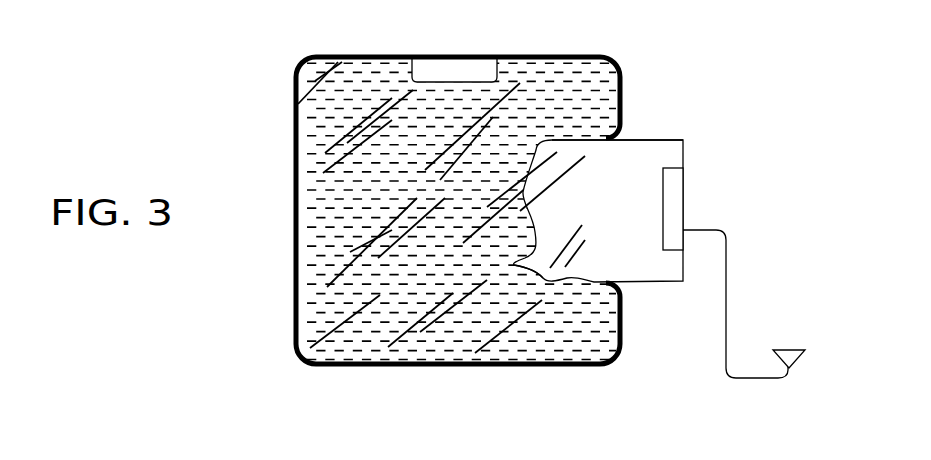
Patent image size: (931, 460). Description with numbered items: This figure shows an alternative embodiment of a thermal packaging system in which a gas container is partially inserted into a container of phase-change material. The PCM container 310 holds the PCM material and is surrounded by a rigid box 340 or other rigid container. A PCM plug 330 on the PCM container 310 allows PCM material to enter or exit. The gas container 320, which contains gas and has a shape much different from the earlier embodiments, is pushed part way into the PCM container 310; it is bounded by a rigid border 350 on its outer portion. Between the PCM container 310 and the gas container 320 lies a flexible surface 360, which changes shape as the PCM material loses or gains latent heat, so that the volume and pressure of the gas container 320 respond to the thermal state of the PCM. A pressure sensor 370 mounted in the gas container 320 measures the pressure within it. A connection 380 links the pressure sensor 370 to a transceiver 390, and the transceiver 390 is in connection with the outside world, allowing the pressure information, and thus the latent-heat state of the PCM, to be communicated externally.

The PCM container 310 is at (300, 263).
The gas container 320 is at (625, 260).
The PCM plug 330 is at (436, 68).
The rigid box 340 is at (294, 157).
The rigid border 350 is at (665, 140).
The flexible surface 360 is at (514, 265).
The pressure sensor 370 is at (685, 210).
The connection 380 is at (726, 366).
The transceiver 390 is at (792, 352).